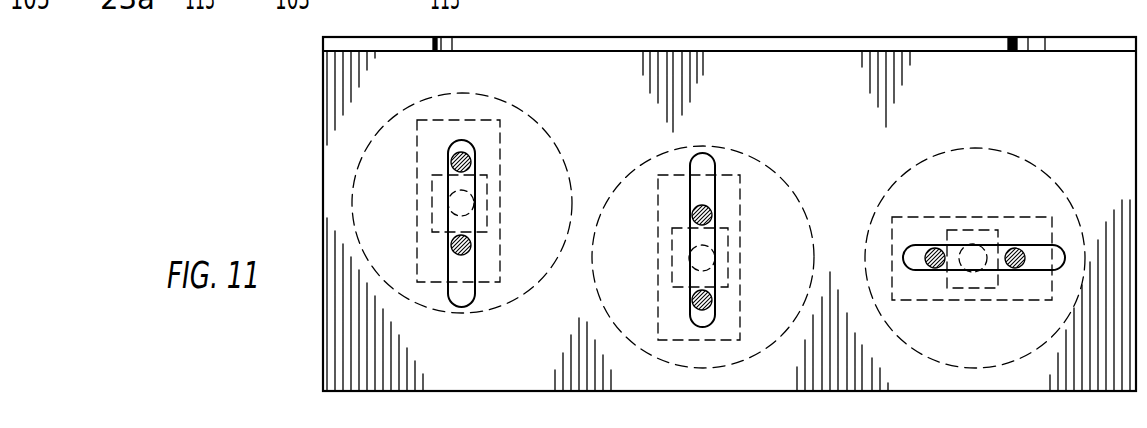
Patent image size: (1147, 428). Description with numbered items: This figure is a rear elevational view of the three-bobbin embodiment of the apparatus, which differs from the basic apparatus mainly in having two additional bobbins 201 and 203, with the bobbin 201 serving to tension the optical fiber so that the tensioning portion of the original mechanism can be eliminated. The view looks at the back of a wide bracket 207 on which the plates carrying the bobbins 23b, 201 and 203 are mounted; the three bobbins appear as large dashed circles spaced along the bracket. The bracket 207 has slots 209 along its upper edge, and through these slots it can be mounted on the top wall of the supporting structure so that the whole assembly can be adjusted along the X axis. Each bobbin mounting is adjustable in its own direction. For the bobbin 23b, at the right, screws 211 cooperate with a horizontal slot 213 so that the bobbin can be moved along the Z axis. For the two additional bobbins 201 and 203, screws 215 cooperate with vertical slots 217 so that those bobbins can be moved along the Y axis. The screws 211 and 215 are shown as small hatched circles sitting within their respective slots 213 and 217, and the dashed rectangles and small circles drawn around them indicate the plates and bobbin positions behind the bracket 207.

The bobbin 201 is at (743, 153).
The bobbin 203 is at (383, 283).
The bracket 207 is at (323, 123).
The slots 209 is at (444, 51).
The screws 211 is at (1009, 250).
The slots 213 is at (1060, 262).
The screws 215 is at (449, 164).
The slots 217 is at (467, 143).
The bobbin 23b is at (1025, 157).